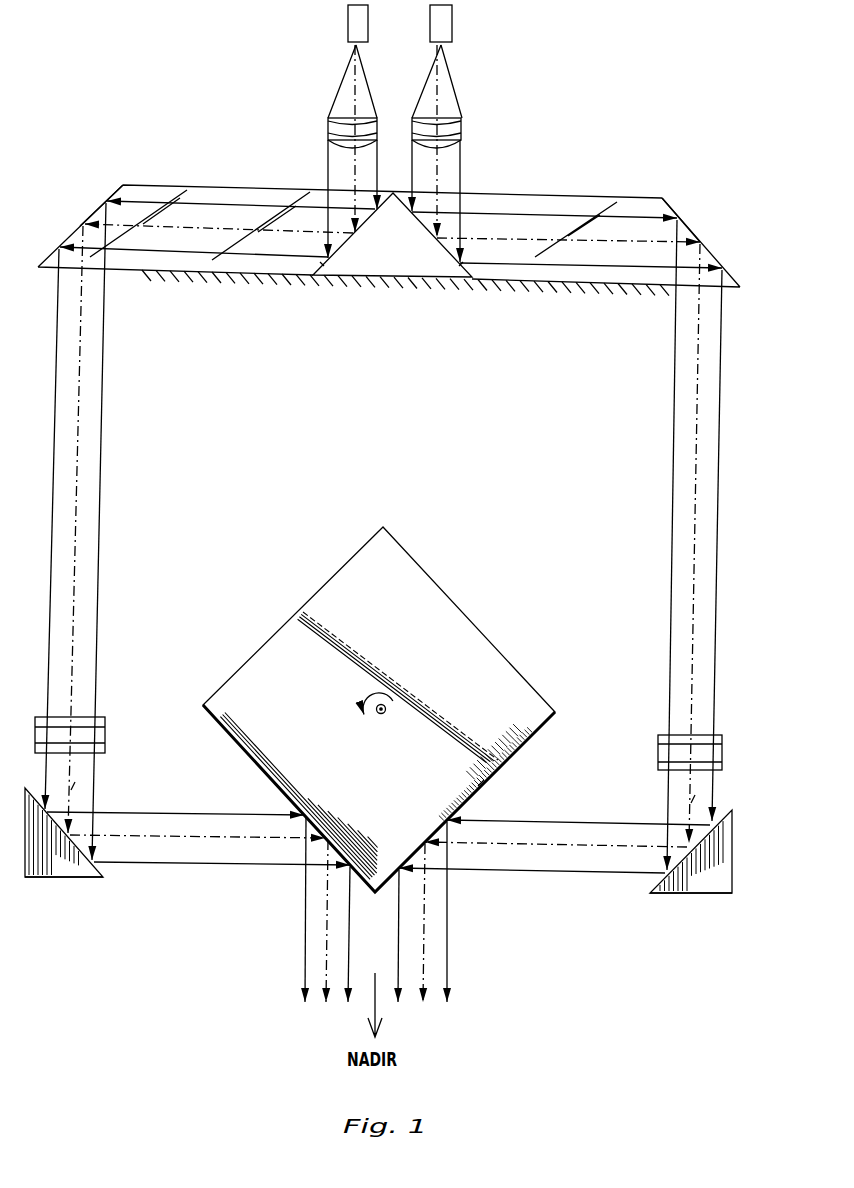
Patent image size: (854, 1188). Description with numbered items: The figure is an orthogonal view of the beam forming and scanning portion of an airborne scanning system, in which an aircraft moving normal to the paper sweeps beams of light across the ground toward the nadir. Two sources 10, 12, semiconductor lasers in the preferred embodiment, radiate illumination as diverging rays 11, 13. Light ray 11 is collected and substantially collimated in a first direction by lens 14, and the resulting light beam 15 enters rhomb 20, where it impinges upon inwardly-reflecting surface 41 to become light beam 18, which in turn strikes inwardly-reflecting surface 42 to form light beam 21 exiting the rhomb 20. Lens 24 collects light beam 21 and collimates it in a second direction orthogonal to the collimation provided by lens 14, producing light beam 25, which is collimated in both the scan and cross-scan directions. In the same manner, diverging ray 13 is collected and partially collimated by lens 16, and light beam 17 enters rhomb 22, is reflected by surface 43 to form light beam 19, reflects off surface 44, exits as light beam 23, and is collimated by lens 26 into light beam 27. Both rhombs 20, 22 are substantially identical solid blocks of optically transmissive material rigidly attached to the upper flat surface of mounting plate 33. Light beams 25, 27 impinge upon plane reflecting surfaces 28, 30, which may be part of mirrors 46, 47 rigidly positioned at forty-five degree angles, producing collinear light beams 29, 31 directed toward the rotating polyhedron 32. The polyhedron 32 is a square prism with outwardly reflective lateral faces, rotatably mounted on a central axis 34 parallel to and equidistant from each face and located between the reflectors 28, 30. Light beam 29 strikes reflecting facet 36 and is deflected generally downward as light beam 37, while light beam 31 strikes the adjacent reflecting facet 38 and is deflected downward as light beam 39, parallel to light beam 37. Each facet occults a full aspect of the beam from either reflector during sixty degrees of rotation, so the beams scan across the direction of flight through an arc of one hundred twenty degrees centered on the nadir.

The source 10 is at (348, 19).
The diverging rays 11 is at (355, 72).
The source 12 is at (452, 20).
The diverging rays 13 is at (439, 79).
The lens 14 is at (330, 126).
The light beam 15 is at (353, 178).
The lens 16 is at (460, 123).
The light beam 17 is at (437, 178).
The light beam 18 is at (193, 228).
The light beam 19 is at (612, 242).
The rhomb 20 is at (205, 188).
The light beam 21 is at (80, 339).
The rhomb 22 is at (563, 196).
The light beam 23 is at (698, 354).
The lens 24 is at (105, 738).
The light beam 25 is at (70, 785).
The lens 26 is at (658, 750).
The light beam 27 is at (689, 797).
The reflecting surface 28 is at (103, 877).
The light beam 29 is at (197, 838).
The reflecting surface 30 is at (650, 888).
The light beam 31 is at (577, 849).
The rotating polyhedron 32 is at (493, 647).
The mounting plate 33 is at (388, 275).
The central axis 34 is at (387, 716).
The reflecting facet 36 is at (273, 784).
The light beam 37 is at (327, 930).
The reflecting facet 38 is at (476, 792).
The light beam 39 is at (423, 933).
The inwardly-reflecting surface 41 is at (322, 261).
The inwardly-reflecting surface 42 is at (123, 185).
The surface 43 is at (472, 251).
The surface 44 is at (662, 198).
The mirror 46 is at (88, 880).
The mirror 47 is at (700, 895).